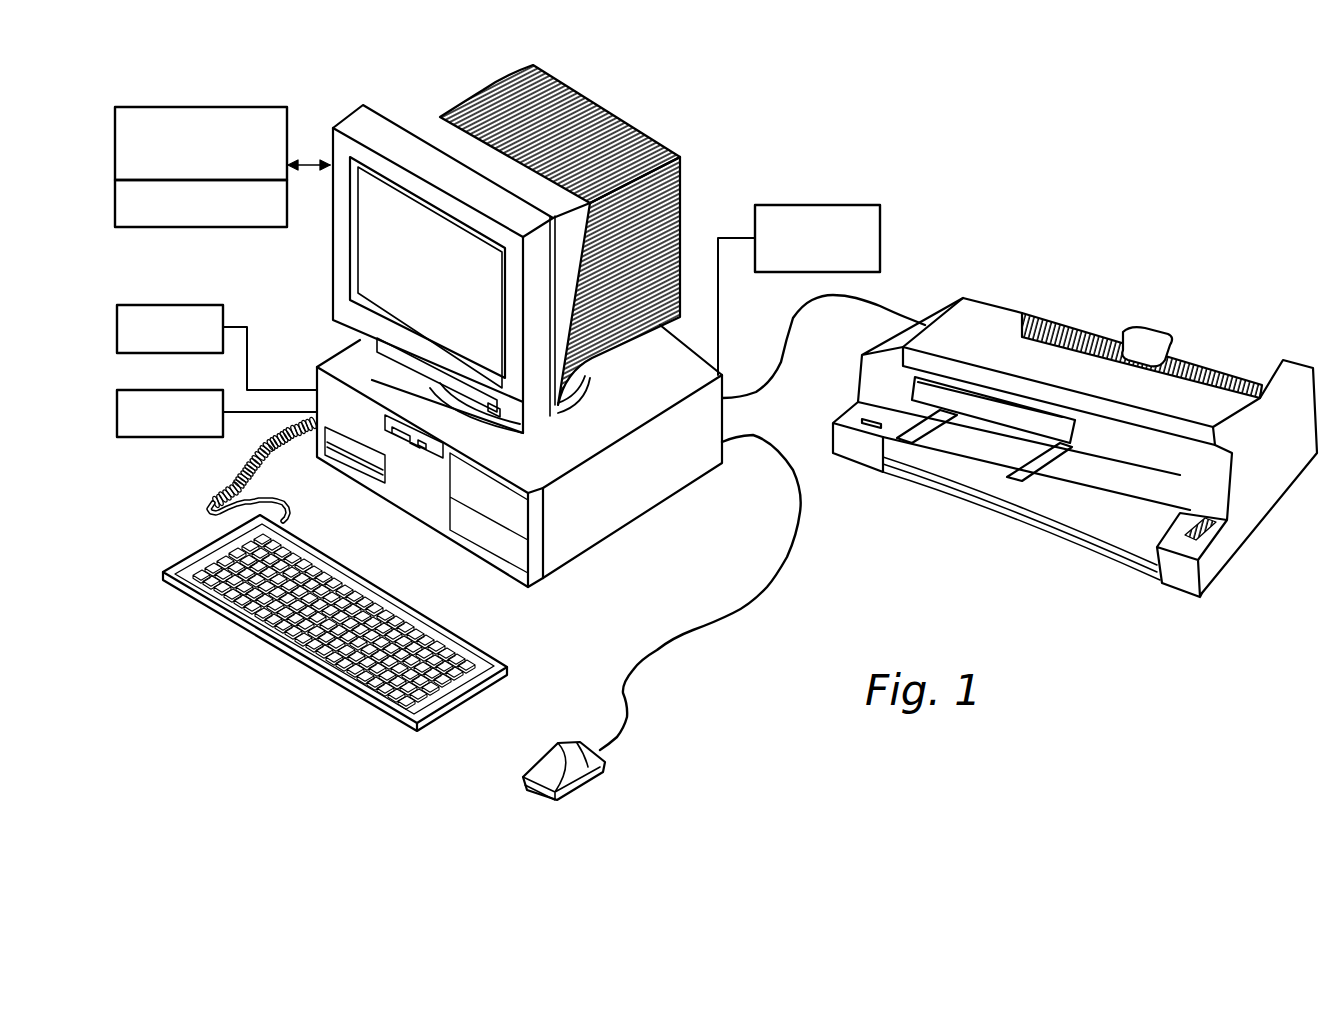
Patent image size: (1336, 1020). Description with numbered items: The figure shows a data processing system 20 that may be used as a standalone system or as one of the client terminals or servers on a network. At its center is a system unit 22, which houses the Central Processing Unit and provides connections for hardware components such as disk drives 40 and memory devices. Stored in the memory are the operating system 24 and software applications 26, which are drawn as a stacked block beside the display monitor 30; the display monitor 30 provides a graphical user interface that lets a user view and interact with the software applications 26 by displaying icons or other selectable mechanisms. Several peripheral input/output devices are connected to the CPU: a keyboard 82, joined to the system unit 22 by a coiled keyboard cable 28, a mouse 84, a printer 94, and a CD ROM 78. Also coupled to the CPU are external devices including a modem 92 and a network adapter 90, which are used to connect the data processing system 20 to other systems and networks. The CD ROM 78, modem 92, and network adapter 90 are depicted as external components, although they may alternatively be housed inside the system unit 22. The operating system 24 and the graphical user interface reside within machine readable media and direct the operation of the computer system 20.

The data processing system 20 is at (862, 115).
The system unit 22 is at (534, 593).
The operating system 24 is at (133, 227).
The software applications 26 is at (134, 107).
The keyboard cable 28 is at (240, 472).
The display monitor 30 is at (447, 287).
The disk drives 40 is at (412, 443).
The CD ROM 78 is at (140, 437).
The keyboard 82 is at (315, 663).
The mouse 84 is at (600, 778).
The network adapter 90 is at (882, 217).
The modem 92 is at (140, 353).
The printer 94 is at (1030, 292).